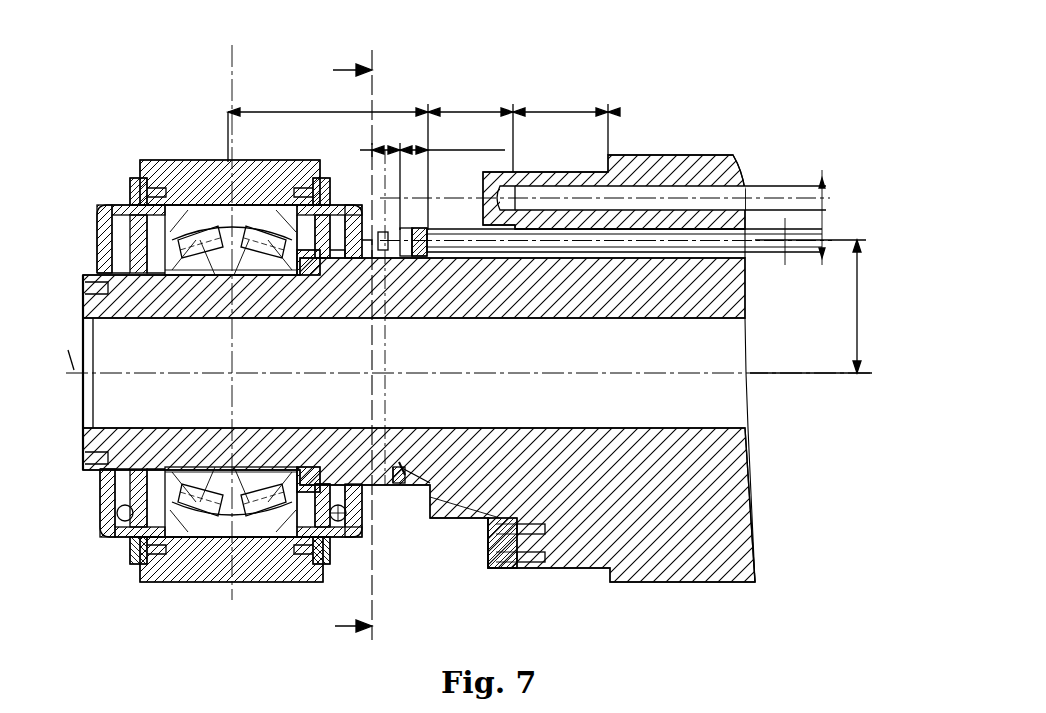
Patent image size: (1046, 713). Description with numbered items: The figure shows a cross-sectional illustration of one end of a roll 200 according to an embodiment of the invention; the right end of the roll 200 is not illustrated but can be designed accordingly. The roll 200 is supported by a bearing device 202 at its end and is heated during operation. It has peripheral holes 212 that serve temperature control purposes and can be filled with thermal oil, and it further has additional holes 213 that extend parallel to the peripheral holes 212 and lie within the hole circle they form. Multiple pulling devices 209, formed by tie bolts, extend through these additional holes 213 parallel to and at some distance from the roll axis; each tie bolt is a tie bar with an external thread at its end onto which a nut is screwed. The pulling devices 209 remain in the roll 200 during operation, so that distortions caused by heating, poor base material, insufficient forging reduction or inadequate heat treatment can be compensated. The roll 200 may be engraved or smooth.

The roll 200 is at (244, 46).
The bearing device 202 is at (279, 568).
The pulling element 209 is at (717, 256).
The peripheral holes 212 is at (728, 190).
The additional holes 213 is at (753, 230).